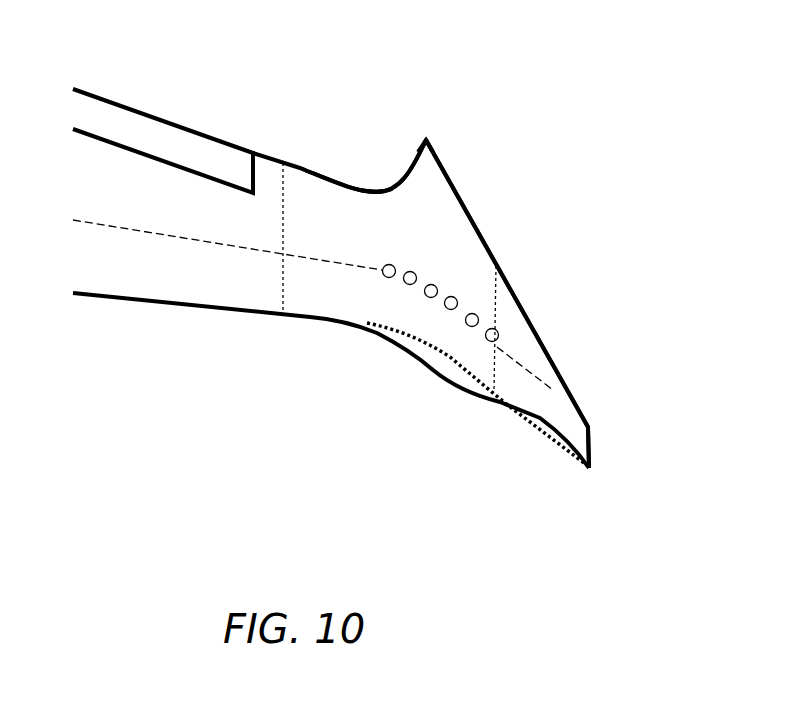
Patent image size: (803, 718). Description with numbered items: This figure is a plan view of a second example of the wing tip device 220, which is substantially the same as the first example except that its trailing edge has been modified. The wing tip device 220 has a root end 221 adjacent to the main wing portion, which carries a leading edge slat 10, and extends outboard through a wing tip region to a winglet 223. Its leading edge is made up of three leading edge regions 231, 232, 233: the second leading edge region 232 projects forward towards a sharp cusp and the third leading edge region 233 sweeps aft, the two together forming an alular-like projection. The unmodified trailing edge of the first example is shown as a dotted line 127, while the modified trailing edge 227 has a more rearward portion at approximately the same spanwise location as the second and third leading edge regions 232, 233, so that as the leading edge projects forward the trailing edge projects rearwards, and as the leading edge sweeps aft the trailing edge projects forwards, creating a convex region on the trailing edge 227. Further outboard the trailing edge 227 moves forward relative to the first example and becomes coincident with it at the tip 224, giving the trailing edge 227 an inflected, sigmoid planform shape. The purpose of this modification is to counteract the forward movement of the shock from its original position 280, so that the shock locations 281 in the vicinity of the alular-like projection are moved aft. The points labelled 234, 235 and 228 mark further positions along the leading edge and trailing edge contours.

The leading edge slat 10 is at (132, 127).
The wing tip device 220 is at (530, 235).
The first leading edge region 231 is at (337, 177).
The second leading edge region 232 is at (415, 157).
The third leading edge region 233 is at (445, 163).
The trough of curved portion 234 is at (387, 187).
The apex / peak 235 is at (426, 140).
The tip 224 is at (592, 445).
The unmodified trailing edge 127 is at (448, 357).
The trailing edge 227 is at (418, 361).
The junction point of contours 228 is at (495, 393).
The winglet 223 is at (531, 353).
The original shock position 280 is at (195, 240).
The root end 221 is at (282, 278).
The shock locations 281 is at (406, 284).